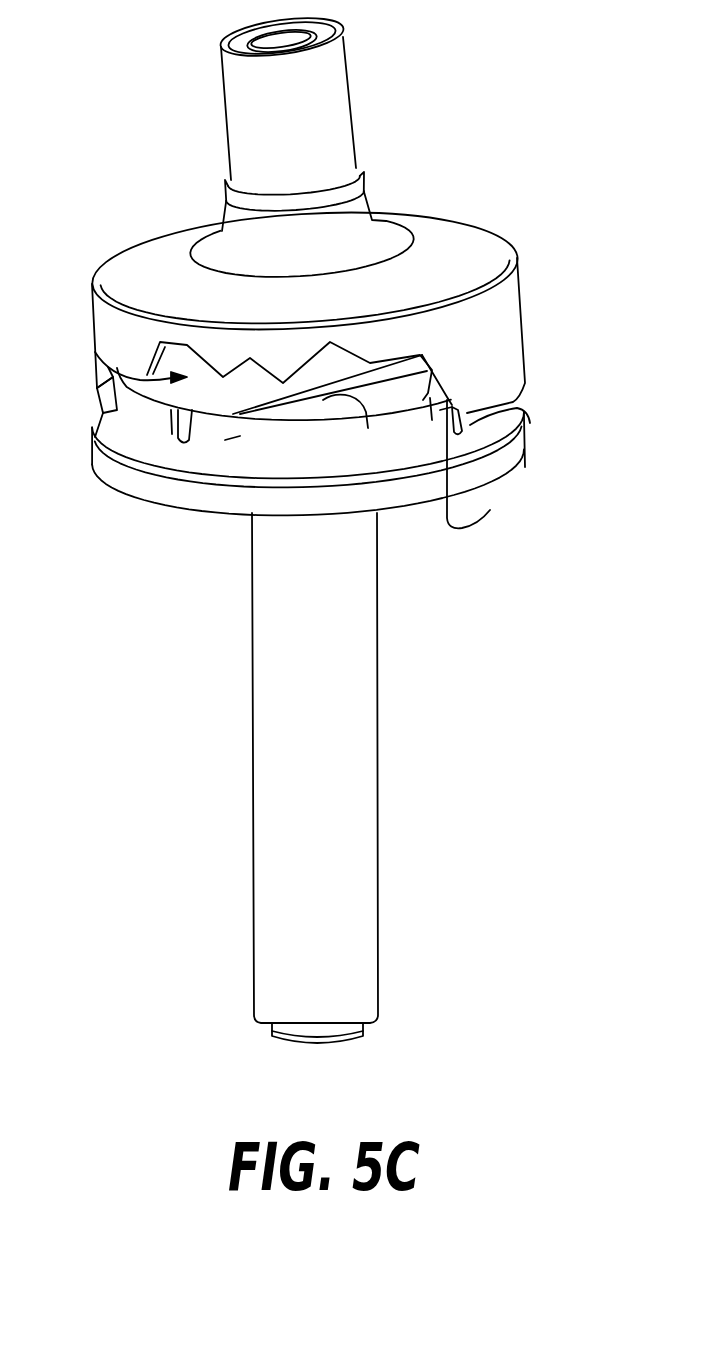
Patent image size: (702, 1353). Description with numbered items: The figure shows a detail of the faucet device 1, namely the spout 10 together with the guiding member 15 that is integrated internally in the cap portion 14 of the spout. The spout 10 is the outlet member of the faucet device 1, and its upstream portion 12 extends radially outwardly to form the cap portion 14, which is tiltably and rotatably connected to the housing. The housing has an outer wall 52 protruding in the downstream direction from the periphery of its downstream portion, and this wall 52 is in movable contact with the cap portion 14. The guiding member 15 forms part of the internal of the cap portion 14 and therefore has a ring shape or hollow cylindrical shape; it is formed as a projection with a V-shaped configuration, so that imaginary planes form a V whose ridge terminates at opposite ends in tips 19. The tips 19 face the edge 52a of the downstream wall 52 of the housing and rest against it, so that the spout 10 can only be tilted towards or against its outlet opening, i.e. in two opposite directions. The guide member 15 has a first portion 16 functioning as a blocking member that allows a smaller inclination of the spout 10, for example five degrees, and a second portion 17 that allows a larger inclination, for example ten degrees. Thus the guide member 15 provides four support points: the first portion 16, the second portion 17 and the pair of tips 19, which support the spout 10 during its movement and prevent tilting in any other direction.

The faucet device 1 is at (229, 921).
The spout 10 is at (362, 108).
The upstream portion 12 is at (365, 197).
The cap portion 14 is at (507, 312).
The guiding member 15 is at (95, 351).
The first portion 16 is at (170, 411).
The second portion 17 is at (364, 432).
The tips 19 is at (238, 410).
The outer wall 52 is at (487, 424).
The edge 52a is at (480, 516).